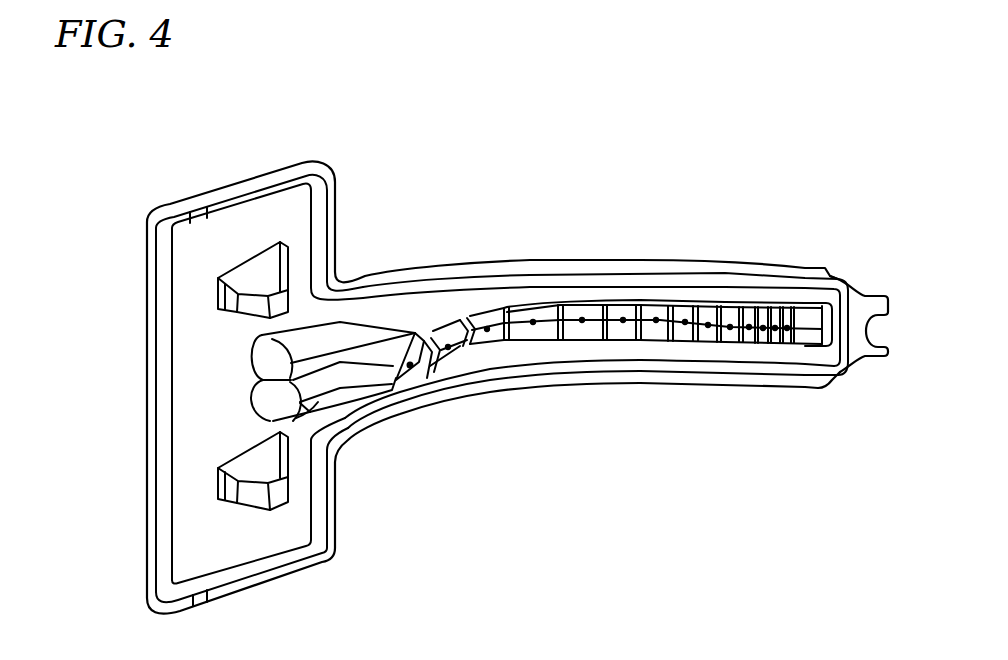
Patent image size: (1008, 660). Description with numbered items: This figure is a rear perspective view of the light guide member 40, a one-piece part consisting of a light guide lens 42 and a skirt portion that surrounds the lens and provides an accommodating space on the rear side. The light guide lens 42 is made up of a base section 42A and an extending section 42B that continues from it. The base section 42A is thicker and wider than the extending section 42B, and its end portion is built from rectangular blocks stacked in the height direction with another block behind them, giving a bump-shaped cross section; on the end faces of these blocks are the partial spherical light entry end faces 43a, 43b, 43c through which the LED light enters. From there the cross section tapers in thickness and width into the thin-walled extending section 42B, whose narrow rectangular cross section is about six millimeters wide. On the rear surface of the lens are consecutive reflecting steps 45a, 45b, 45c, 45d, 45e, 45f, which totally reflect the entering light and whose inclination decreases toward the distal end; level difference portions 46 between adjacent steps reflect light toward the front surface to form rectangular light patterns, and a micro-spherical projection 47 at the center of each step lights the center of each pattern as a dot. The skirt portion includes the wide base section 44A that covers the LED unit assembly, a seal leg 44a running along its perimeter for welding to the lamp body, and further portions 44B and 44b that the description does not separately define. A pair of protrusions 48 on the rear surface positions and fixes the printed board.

The light guide member 40 is at (330, 104).
The light guide lens 42 is at (587, 150).
The base section 42A is at (358, 320).
The extending section 42B is at (562, 288).
The light entry end face 43a is at (285, 363).
The light entry end face 43b is at (287, 402).
The light entry end face 43c is at (295, 425).
The base section of the skirt portion 44A is at (152, 243).
The tip portion 44B is at (740, 262).
The seal leg 44a is at (688, 280).
The lower wall 44b is at (652, 373).
The reflecting step 45a is at (410, 358).
The reflecting step 45b is at (446, 340).
The reflecting step 45c is at (488, 322).
The reflecting step 45d is at (533, 316).
The reflecting step 45e is at (583, 313).
The reflecting step 45f is at (622, 313).
The level difference portion 46 is at (440, 372).
The micro-spherical projection 47 is at (488, 352).
The protrusion 48 is at (250, 278).